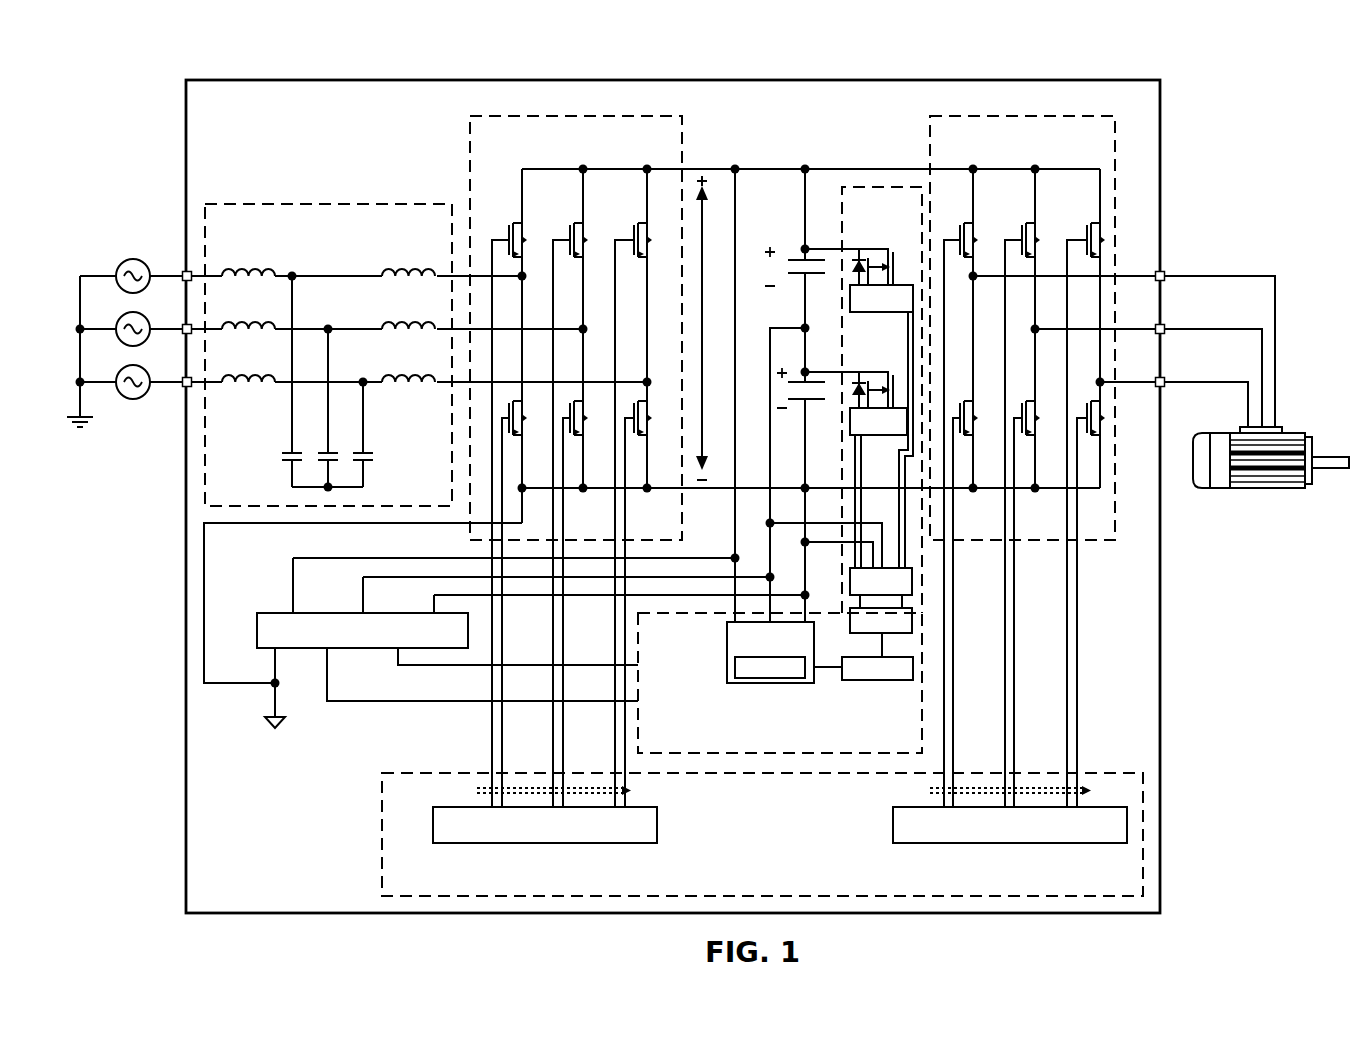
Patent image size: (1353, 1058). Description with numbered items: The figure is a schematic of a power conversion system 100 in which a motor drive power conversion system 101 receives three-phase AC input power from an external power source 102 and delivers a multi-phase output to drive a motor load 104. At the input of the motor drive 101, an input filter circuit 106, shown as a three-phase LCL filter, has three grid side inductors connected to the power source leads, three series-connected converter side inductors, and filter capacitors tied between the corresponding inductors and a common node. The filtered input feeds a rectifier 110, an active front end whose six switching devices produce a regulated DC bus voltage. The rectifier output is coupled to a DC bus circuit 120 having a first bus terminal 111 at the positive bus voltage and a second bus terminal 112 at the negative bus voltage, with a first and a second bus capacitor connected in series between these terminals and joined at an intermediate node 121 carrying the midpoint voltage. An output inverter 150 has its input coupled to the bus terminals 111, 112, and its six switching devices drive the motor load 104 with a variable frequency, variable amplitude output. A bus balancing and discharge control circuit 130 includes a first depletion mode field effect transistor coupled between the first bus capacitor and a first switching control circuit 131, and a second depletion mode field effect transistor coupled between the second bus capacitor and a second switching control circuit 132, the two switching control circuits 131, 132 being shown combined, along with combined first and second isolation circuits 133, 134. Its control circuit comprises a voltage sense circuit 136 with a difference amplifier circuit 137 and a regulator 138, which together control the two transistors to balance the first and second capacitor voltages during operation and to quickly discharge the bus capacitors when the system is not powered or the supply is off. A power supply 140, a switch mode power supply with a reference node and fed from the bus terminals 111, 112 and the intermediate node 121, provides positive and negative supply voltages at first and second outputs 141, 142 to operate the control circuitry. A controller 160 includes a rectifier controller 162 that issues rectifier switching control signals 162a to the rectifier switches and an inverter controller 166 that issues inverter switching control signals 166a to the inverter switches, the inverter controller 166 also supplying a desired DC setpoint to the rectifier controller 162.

The power conversion system 100 is at (127, 74).
The motor drive power conversion system 101 is at (240, 80).
The external power source 102 is at (110, 257).
The motor load 104 is at (1298, 433).
The input filter circuit 106 is at (315, 204).
The rectifier 110 is at (577, 116).
The first bus terminal 111 is at (673, 168).
The second bus terminal 112 is at (673, 488).
The DC bus circuit 120 is at (833, 126).
The intermediate node 121 is at (803, 317).
The bus balancing and discharge control circuit 130 is at (888, 187).
The first switching control circuit 131 is at (913, 584).
The second switching control circuit 132 is at (927, 596).
The first isolation circuit 133 is at (913, 620).
The second isolation circuit 134 is at (938, 646).
The voltage sense circuit 136 is at (727, 638).
The difference amplifier circuit 137 is at (735, 668).
The regulator 138 is at (856, 657).
The power supply 140 is at (257, 630).
The first output 141 is at (398, 666).
The second output 142 is at (327, 679).
The output inverter 150 is at (1024, 116).
The controller 160 is at (382, 880).
The rectifier controller 162 is at (433, 828).
The rectifier switching control signal 162a is at (477, 790).
The inverter controller 166 is at (893, 828).
The inverter switching control signal 166a is at (930, 790).